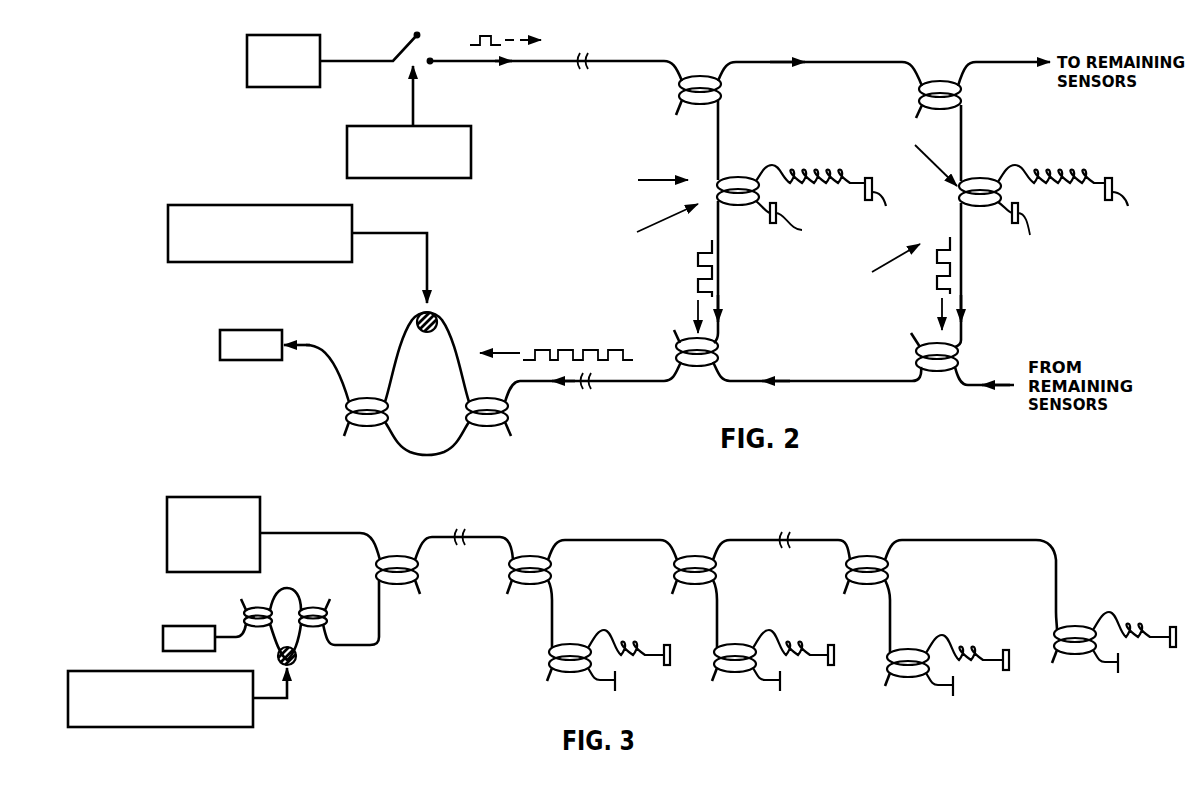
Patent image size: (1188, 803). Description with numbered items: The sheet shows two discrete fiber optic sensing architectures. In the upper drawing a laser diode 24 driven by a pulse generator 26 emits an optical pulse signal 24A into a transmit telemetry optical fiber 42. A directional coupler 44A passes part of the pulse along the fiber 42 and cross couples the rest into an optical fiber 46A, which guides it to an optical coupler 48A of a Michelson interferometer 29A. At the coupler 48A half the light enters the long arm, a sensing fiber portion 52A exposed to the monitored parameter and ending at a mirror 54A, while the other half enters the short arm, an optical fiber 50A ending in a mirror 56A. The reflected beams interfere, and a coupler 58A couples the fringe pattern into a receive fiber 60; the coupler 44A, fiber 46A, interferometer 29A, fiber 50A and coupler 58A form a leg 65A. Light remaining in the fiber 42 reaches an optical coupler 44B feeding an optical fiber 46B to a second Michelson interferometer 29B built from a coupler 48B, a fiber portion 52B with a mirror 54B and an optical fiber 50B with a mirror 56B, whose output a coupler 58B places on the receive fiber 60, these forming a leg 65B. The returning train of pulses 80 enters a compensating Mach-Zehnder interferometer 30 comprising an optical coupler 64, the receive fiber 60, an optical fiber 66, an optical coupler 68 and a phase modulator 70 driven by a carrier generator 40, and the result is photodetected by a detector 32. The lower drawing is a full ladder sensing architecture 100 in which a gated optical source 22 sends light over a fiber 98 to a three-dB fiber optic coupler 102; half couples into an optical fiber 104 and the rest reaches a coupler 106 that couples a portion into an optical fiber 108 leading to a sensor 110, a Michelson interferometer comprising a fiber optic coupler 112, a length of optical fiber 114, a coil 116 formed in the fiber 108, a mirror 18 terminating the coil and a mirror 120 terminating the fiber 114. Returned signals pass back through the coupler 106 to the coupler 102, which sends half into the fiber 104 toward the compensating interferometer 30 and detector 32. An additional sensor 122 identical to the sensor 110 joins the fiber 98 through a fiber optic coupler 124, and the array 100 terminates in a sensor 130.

In FIG. 2, the laser diode 24 is at (290, 88).
In FIG. 2, the optical pulse signal 24A is at (466, 35).
In FIG. 2, the pulse generator 26 is at (471, 140).
In FIG. 2, the transmit telemetry optical fiber 42 is at (546, 63).
In FIG. 2, the directional coupler 44A is at (694, 66).
In FIG. 2, the optical coupler 44B is at (942, 68).
In FIG. 2, the optical fiber 46A is at (718, 166).
In FIG. 2, the optical fiber 46B is at (962, 125).
In FIG. 2, the optical coupler 48A is at (740, 168).
In FIG. 2, the coupler 48B is at (984, 166).
In FIG. 2, the sensing fiber portion 52A is at (802, 148).
In FIG. 2, the fiber portion 52B is at (1088, 162).
In FIG. 2, the mirror 54A is at (888, 204).
In FIG. 2, the mirror 54B is at (1124, 207).
In FIG. 2, the mirror 56A is at (799, 221).
In FIG. 2, the mirror 56B is at (1025, 234).
In FIG. 2, the leg 65A is at (642, 178).
In FIG. 2, the leg 65B is at (880, 270).
In FIG. 2, the Michelson interferometer 29A is at (648, 226).
In FIG. 2, the Michelson interferometer 29B is at (921, 157).
In FIG. 2, the optical fiber 50A is at (720, 283).
In FIG. 2, the optical fiber 50B is at (961, 270).
In FIG. 2, the coupler 58A is at (722, 349).
In FIG. 2, the coupler 58B is at (962, 354).
In FIG. 2, the receive fiber 60 is at (623, 383).
In FIG. 2, the returning train of pulses 80 is at (578, 330).
In FIG. 2, the optical coupler 64 is at (520, 421).
In FIG. 2, the optical fiber 66 is at (460, 444).
In FIG. 2, the optical coupler 68 is at (358, 385).
In FIG. 2, the phase modulator 70 is at (440, 305).
In FIG. 2, the carrier generator 40 is at (232, 203).
In FIG. 3, the carrier generator 40 is at (118, 671).
In FIG. 2, the detector 32 is at (245, 362).
In FIG. 3, the detector 32 is at (163, 642).
In FIG. 3, the time-gated optical source 22 is at (228, 497).
In FIG. 3, the fiber 98 is at (280, 533).
In FIG. 3, the fiber optic coupler 102 is at (397, 554).
In FIG. 3, the optical fiber 104 is at (378, 598).
In FIG. 3, the compensating Mach-Zehnder interferometer 30 is at (297, 650).
In FIG. 3, the coupler 106 is at (529, 550).
In FIG. 3, the optical fiber 108 is at (552, 597).
In FIG. 3, the sensor 110 is at (581, 653).
In FIG. 3, the fiber optic coupler 112 is at (577, 668).
In FIG. 3, the length of optical fiber 114 is at (555, 678).
In FIG. 3, the coil 116 is at (630, 640).
In FIG. 3, the reflector 18 is at (681, 663).
In FIG. 3, the mirror 120 is at (622, 685).
In FIG. 3, the fiber optic coupler 124 is at (715, 585).
In FIG. 3, the sensor 122 is at (797, 679).
In FIG. 3, the full ladder sensing architecture 100 is at (766, 518).
In FIG. 3, the sensor 130 is at (1082, 609).